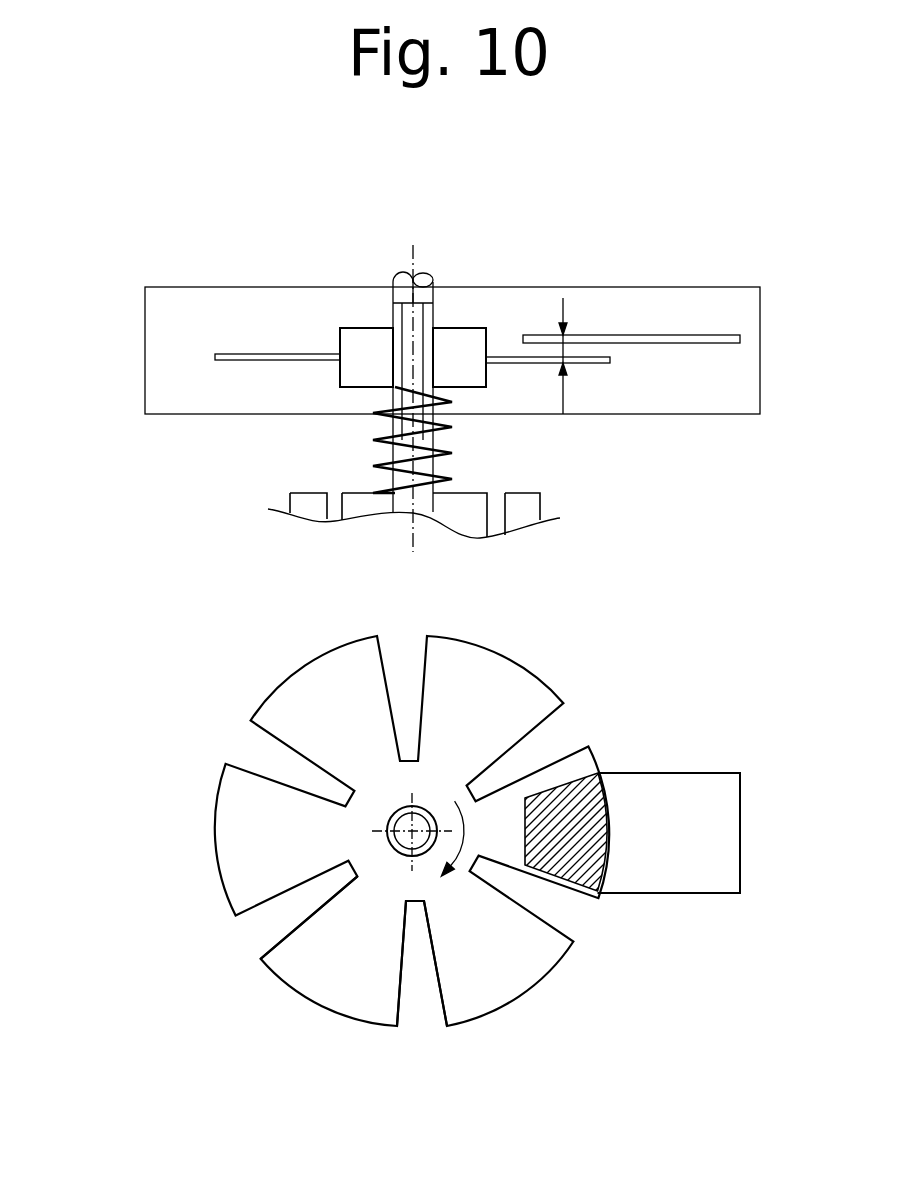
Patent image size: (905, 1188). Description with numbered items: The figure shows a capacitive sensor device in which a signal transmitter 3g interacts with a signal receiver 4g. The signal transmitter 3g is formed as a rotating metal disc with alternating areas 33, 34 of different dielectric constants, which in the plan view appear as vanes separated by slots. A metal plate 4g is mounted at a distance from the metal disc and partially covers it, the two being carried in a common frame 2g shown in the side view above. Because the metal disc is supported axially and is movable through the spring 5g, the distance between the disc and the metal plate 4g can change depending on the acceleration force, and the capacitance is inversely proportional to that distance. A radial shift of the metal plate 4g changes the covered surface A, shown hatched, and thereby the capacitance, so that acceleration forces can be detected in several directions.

The base frame 2g is at (170, 387).
The signal transmitter 3g is at (267, 353).
The signal receiver 4g is at (743, 348).
The spring 5g is at (373, 467).
The area 33 is at (303, 967).
The area 34 is at (420, 998).
The covered surface A is at (565, 833).